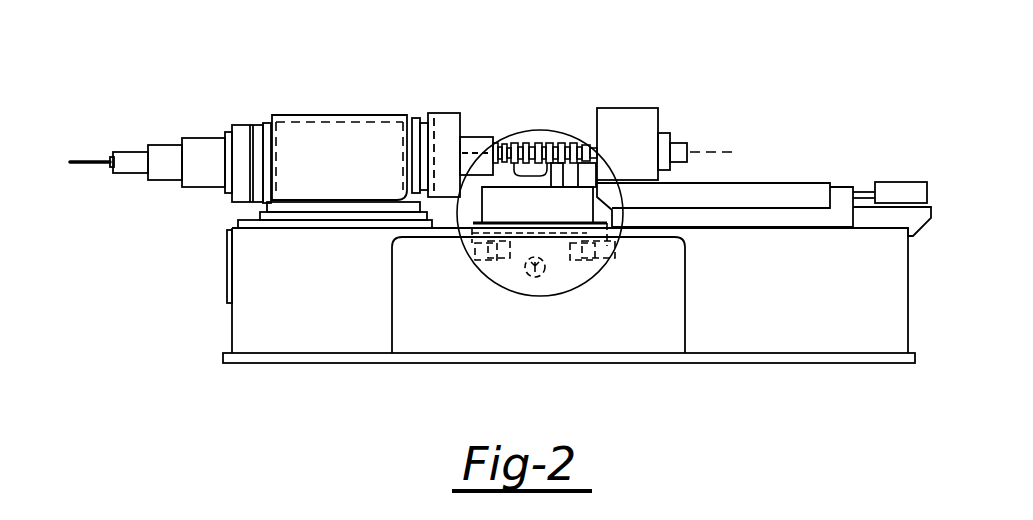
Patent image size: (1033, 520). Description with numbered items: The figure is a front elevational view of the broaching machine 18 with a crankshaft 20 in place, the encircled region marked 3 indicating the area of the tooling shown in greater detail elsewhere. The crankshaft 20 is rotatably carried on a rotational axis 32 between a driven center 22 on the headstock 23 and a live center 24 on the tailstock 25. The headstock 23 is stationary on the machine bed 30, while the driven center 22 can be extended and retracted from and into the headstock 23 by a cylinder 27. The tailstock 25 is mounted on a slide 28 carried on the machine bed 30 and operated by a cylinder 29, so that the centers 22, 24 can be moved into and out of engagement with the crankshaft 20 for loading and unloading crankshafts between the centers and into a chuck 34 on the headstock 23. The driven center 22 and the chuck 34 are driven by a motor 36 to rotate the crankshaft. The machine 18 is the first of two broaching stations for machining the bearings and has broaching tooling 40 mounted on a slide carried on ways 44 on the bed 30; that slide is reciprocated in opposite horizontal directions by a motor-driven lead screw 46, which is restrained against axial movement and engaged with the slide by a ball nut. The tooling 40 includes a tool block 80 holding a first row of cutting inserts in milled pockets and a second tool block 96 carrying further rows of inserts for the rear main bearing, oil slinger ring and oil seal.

The broaching machine 18 is at (230, 327).
The crankshaft 20 is at (530, 140).
The driven center 22 is at (493, 140).
The headstock 23 is at (363, 116).
The live center 24 is at (592, 140).
The tailstock 25 is at (627, 108).
The cylinder 27 is at (132, 167).
The slide 28 is at (766, 183).
The cylinder 29 is at (917, 150).
The machine bed 30 is at (243, 262).
The rotational axis 32 is at (733, 152).
The chuck 34 is at (447, 113).
The motor 36 is at (330, 120).
The broaching tooling 40 is at (566, 187).
The ways 44 is at (477, 255).
The lead screw 46 is at (537, 280).
The tool block 80 is at (512, 140).
The second tool block 96 is at (658, 113).
The detail circle for FIG. 3 is at (588, 148).